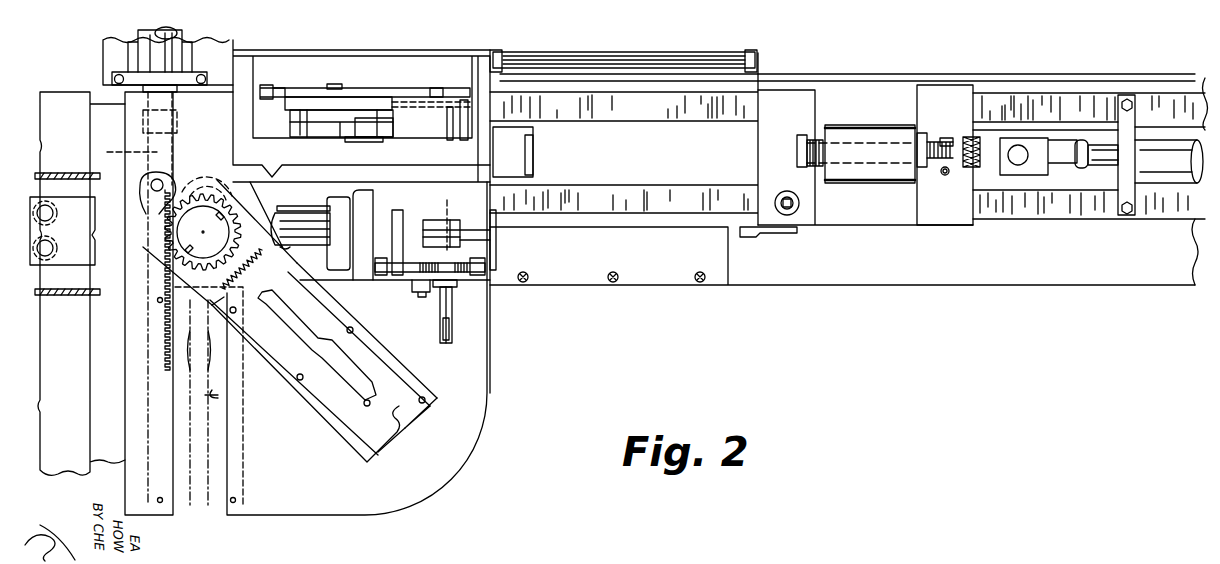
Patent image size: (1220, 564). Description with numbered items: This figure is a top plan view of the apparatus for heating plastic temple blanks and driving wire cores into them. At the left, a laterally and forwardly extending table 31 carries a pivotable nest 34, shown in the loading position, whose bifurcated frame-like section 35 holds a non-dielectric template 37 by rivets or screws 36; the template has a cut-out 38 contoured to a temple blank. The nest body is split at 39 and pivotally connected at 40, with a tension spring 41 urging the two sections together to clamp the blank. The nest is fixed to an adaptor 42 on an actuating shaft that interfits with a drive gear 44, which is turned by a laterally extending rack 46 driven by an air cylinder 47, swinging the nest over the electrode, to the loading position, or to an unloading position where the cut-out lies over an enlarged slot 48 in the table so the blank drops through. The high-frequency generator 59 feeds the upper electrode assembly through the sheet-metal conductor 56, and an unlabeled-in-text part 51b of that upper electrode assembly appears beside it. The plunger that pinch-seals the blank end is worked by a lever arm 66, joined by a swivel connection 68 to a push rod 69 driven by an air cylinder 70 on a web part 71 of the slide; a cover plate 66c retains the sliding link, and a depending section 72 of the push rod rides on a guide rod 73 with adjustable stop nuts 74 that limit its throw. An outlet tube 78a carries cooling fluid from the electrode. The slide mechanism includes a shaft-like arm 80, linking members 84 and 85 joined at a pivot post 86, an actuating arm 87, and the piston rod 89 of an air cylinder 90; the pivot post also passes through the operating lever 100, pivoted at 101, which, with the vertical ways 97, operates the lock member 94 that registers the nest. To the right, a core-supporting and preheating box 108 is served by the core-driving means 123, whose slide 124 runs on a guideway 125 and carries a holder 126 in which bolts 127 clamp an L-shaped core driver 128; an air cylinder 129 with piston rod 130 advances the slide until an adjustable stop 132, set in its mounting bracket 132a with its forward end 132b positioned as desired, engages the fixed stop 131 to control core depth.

The table 31 is at (474, 384).
The nest 34 is at (366, 321).
The bifurcated frame-like section 35 is at (375, 462).
The rivets or screws 36 is at (378, 345).
The template 37 is at (315, 407).
The cut-out 38 is at (366, 403).
The split 39 is at (256, 279).
The pivotal connection 40 is at (150, 185).
The tension spring 41 is at (211, 304).
The adaptor 42 is at (183, 235).
The drive gear 44 is at (207, 188).
The rack 46 is at (117, 152).
The air cylinder 47 is at (142, 43).
The slot 48 is at (218, 398).
The bracket 51b is at (454, 290).
The high-frequency electrical current carrying conductor 56 is at (72, 195).
The high-frequency electrical energy generator 59 is at (54, 91).
The lever arm 66 is at (462, 221).
The cover plate 66c is at (502, 220).
The swivel connection 68 is at (446, 218).
The push rod 69 is at (378, 218).
The air cylinder 70 is at (301, 210).
The web part 71 is at (363, 192).
The depending section 72 is at (401, 224).
The guide rod 73 is at (418, 270).
The stop nuts 74 is at (485, 268).
The outlet tube 78a is at (416, 295).
The shaft-like arm 80 is at (358, 142).
The linking member 84 is at (396, 126).
The linking member 85 is at (306, 114).
The pivot post 86 is at (336, 84).
The actuating arm 87 is at (304, 98).
The piston rod 89 is at (399, 100).
The air cylinder 90 is at (556, 57).
The lock member 94 is at (455, 328).
The vertical ways 97 is at (460, 138).
The operating lever 100 is at (283, 88).
The pivotal connection 101 is at (262, 88).
The core-supporting and preheating box 108 is at (644, 271).
The core-driving means 123 is at (952, 98).
The slide 124 is at (942, 219).
The guideway 125 is at (641, 187).
The holder 126 is at (805, 212).
The bolts 127 is at (780, 196).
The core driver 128 is at (756, 233).
The air cylinder 129 is at (1160, 135).
The piston rod 130 is at (1104, 154).
The fixed stop 131 is at (534, 133).
The adjustable stop 132 is at (810, 139).
The mounting bracket 132a is at (870, 124).
The forward end 132b is at (797, 148).